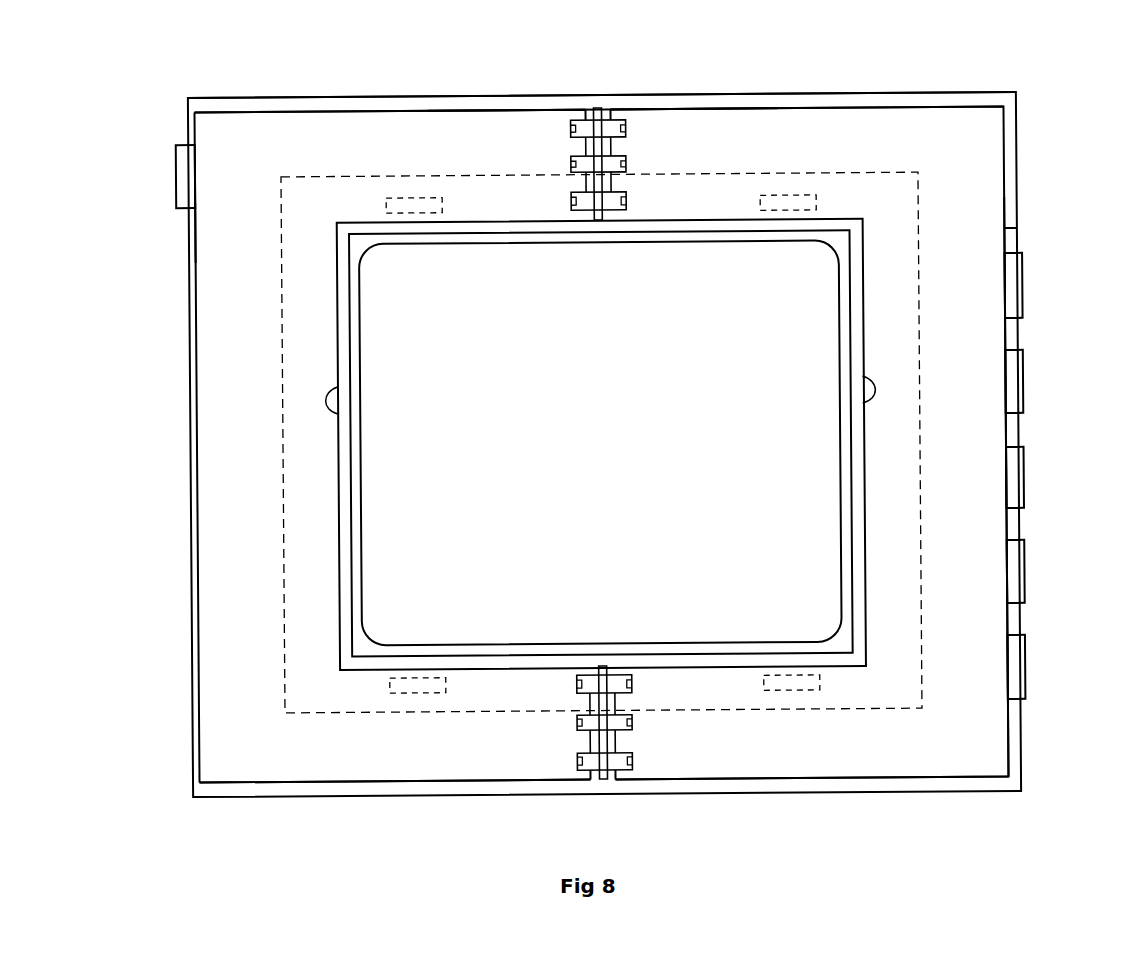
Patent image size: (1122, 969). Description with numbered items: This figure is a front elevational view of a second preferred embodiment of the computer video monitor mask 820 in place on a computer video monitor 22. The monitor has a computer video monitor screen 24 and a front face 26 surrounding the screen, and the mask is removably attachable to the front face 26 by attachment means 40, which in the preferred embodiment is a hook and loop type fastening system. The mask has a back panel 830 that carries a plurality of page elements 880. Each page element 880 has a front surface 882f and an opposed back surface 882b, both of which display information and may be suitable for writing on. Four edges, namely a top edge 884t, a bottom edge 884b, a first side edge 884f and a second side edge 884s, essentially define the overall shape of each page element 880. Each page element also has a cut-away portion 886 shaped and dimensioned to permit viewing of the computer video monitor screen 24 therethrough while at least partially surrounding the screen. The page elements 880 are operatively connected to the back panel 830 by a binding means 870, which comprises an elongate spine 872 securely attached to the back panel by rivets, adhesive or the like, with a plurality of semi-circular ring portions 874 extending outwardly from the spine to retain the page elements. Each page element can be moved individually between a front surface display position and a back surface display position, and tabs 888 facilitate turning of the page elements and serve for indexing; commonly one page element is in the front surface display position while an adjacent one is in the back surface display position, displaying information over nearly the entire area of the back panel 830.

The computer video monitor mask 820 is at (162, 70).
The back panel 830 is at (223, 103).
The page elements 880 is at (393, 124).
The top edge 884t is at (303, 112).
The bottom edge 884b is at (446, 797).
The first side edge 884f is at (198, 472).
The second side edge 884s is at (586, 173).
The front surface 882f is at (478, 156).
The back surface 882b is at (213, 225).
The tabs 888 is at (178, 157).
The computer video monitor 22 is at (280, 293).
The attachment means 40 is at (444, 203).
The computer video monitor screen 24 is at (615, 429).
The front face 26 is at (503, 244).
The cut-away portion 886 is at (338, 412).
The binding means 870 is at (588, 97).
The elongate spine 872 is at (605, 108).
The semi-circular ring portions 874 is at (583, 130).